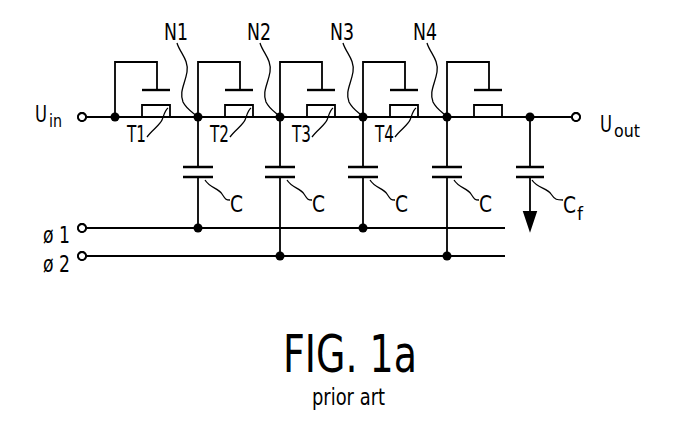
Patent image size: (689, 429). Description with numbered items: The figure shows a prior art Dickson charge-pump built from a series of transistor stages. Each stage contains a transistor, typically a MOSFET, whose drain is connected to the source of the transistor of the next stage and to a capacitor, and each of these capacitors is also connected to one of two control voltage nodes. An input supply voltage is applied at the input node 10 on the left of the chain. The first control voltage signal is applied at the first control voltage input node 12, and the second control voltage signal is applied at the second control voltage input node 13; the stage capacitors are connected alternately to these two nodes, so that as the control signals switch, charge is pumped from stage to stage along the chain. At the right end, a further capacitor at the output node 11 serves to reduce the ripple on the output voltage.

The input node 10 is at (78, 113).
The output node 11 is at (580, 113).
The first control voltage input node 12 is at (79, 225).
The second control voltage input node 13 is at (85, 259).